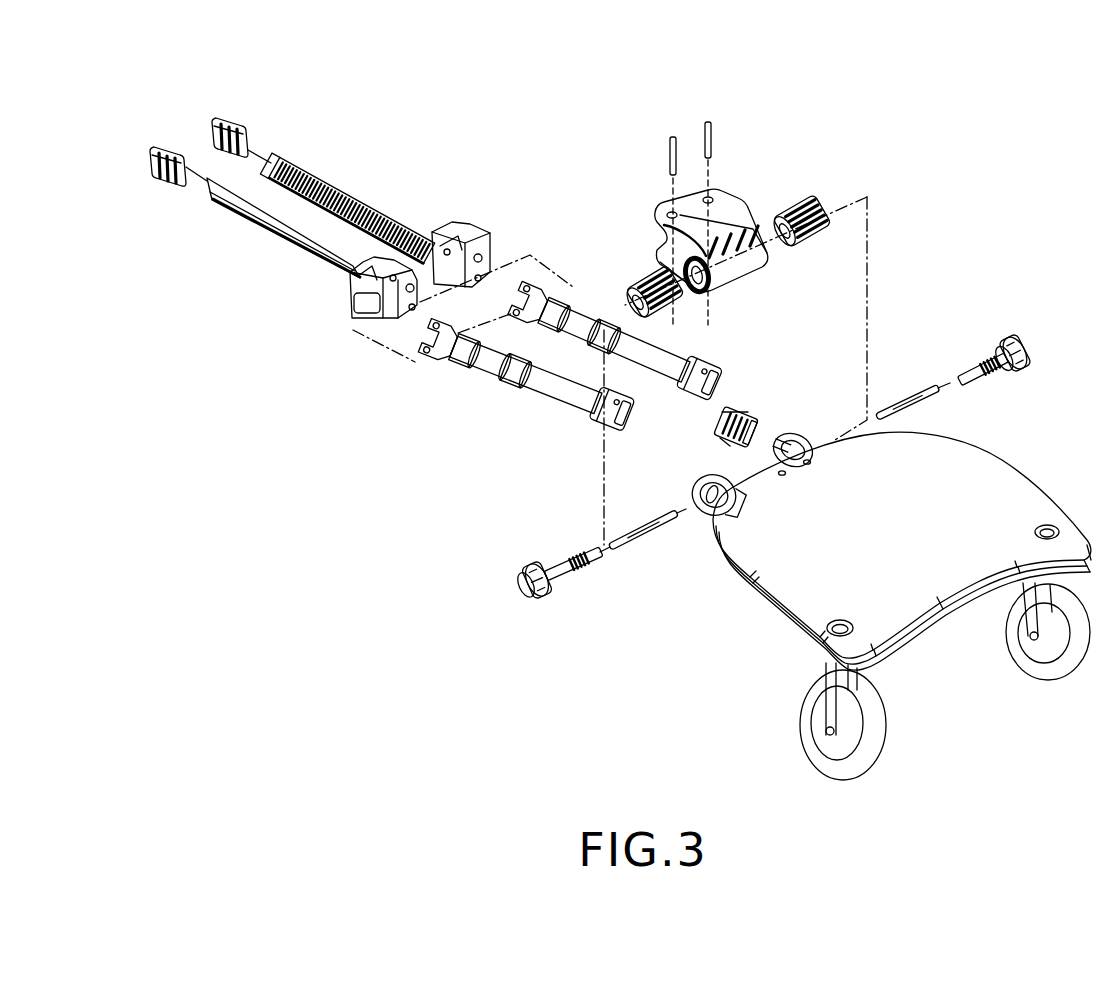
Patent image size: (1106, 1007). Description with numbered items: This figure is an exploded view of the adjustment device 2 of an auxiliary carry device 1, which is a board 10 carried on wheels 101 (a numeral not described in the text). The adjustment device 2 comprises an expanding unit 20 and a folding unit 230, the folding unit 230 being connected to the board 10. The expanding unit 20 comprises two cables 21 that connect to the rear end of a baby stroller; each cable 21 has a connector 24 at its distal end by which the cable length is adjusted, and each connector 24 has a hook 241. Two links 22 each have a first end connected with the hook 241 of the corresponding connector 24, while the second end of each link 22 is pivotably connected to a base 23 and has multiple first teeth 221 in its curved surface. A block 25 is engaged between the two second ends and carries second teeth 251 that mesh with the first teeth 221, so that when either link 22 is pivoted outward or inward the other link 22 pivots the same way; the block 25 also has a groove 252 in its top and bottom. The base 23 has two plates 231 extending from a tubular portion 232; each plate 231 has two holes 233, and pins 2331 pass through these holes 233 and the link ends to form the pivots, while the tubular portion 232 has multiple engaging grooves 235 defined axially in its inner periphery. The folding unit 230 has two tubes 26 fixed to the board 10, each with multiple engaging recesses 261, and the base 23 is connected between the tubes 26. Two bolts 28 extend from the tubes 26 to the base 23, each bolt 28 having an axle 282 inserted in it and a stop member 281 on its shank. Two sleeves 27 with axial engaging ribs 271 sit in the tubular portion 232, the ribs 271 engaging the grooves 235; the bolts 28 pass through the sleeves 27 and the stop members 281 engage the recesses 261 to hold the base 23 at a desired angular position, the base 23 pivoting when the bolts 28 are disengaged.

The auxiliary carry device 1 is at (720, 660).
The adjustment device 2 is at (395, 478).
The board 10 is at (967, 497).
The wheel 101 is at (883, 733).
The expanding unit 20 is at (596, 288).
The cables 21 is at (240, 207).
The links 22 is at (555, 393).
The first teeth 221 is at (687, 397).
The base 23 is at (720, 228).
The folding unit 230 is at (767, 205).
The plates 231 is at (668, 213).
The tubular portion 232 is at (730, 273).
The holes 233 is at (707, 196).
The pins 2331 is at (713, 123).
The engaging grooves 235 is at (697, 294).
The connector 24 is at (378, 328).
The hook 241 is at (447, 362).
The block 25 is at (753, 415).
The second teeth 251 is at (717, 433).
The groove 252 is at (723, 400).
The tubes 26 is at (800, 433).
The engaging recesses 261 is at (697, 515).
The sleeves 27 is at (813, 203).
The engaging ribs 271 is at (800, 221).
The bolts 28 is at (547, 592).
The stop member 281 is at (1003, 370).
The axle 282 is at (637, 543).